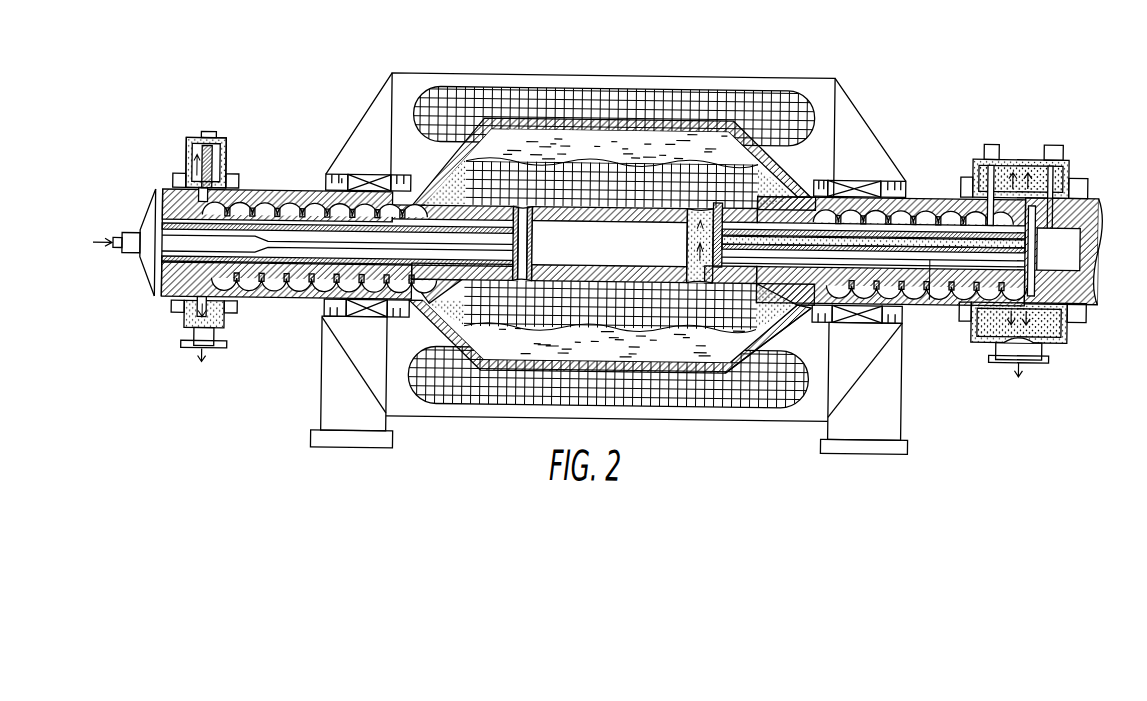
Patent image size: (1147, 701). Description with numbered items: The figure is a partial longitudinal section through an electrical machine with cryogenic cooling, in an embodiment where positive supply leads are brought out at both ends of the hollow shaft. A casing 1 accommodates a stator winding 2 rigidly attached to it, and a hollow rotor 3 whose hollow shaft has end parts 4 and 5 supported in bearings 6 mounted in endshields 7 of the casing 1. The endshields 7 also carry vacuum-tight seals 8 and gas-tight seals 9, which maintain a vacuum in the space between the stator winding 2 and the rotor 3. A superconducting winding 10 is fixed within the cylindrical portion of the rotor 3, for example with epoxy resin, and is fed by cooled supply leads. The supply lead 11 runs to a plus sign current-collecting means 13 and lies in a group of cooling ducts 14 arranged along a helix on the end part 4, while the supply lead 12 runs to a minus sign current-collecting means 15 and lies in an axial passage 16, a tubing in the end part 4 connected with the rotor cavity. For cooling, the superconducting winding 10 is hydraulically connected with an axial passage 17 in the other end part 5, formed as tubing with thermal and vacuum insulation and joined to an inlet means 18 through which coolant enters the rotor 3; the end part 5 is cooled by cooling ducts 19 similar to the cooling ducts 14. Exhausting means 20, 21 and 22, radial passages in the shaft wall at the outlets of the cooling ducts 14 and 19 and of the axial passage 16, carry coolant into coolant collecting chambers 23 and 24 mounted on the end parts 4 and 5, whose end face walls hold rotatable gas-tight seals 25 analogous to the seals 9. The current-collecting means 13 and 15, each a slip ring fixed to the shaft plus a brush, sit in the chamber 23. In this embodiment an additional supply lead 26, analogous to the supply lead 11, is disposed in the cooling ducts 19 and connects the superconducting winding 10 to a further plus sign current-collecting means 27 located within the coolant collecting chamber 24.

The casing 1 is at (598, 244).
The stator winding 2 is at (555, 83).
The hollow rotor 3 is at (640, 121).
The end part of hollow shaft 4 is at (915, 189).
The end part of hollow shaft 5 is at (298, 189).
The bearings 6 is at (358, 320).
The endshields 7 is at (372, 98).
The vacuum-tight seals 8 is at (405, 300).
The gas-tight seals 9 is at (318, 301).
The superconducting winding 10 is at (780, 330).
The supply lead 11 is at (918, 296).
The supply lead 12 is at (690, 249).
The plus sign current-collecting means 13 is at (990, 155).
The cooling ducts 14 is at (950, 203).
The minus sign current-collecting means 15 is at (1065, 165).
The axial passage 16 is at (938, 296).
The axial passage 17 is at (522, 247).
The inlet means 18 is at (150, 262).
The cooling ducts 19 is at (258, 203).
The exhausting means 20 is at (1030, 320).
The exhausting means 21 is at (1045, 278).
The exhausting means 22 is at (162, 206).
The coolant collecting chamber 23 is at (1084, 302).
The coolant collecting chamber 24 is at (186, 166).
The rotatable gas-tight seals 25 is at (185, 320).
The supply lead 26 is at (285, 288).
The plus sign current-collecting means 27 is at (232, 188).